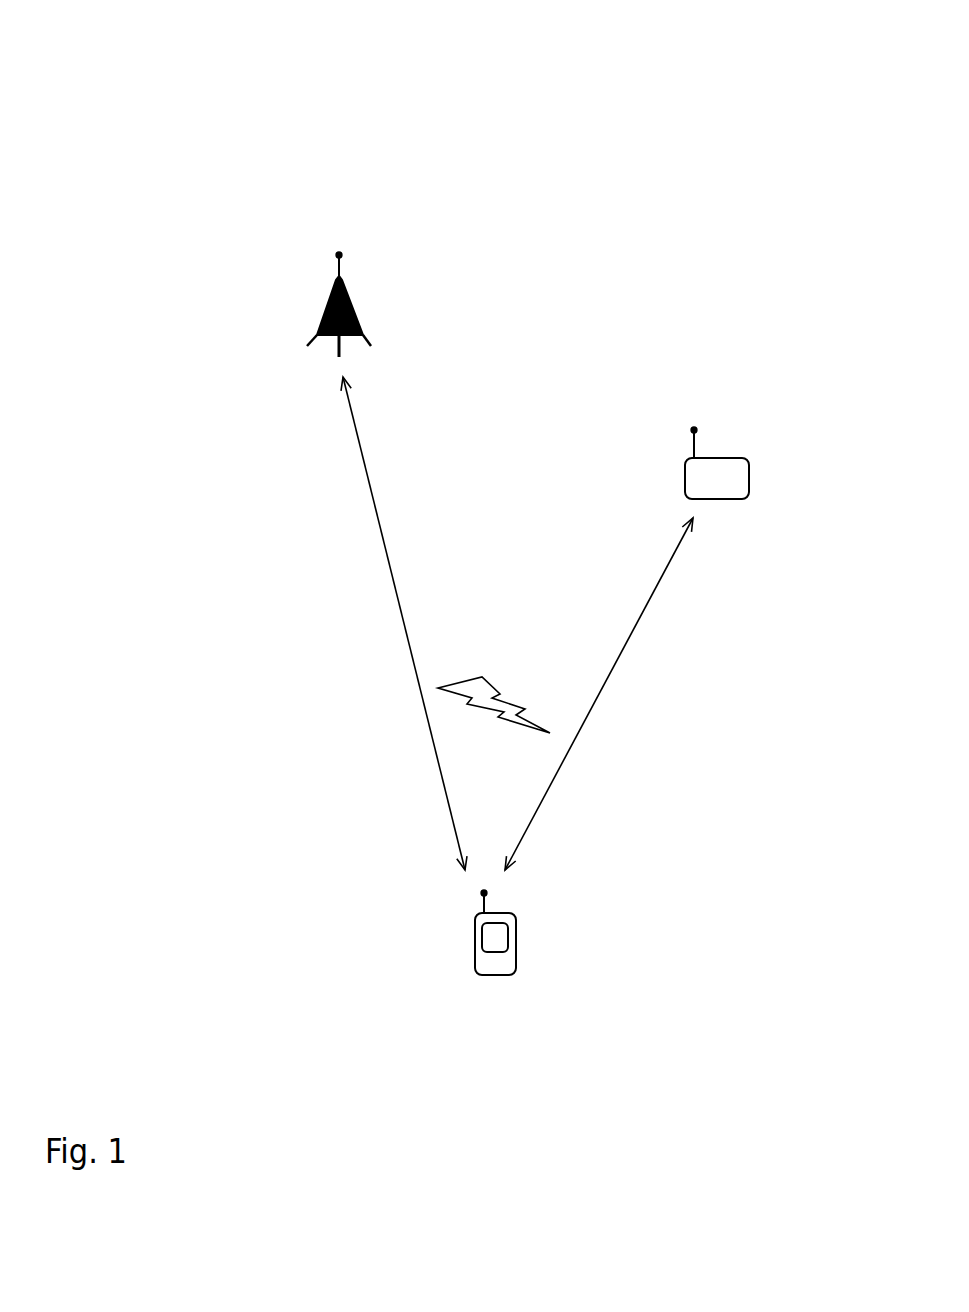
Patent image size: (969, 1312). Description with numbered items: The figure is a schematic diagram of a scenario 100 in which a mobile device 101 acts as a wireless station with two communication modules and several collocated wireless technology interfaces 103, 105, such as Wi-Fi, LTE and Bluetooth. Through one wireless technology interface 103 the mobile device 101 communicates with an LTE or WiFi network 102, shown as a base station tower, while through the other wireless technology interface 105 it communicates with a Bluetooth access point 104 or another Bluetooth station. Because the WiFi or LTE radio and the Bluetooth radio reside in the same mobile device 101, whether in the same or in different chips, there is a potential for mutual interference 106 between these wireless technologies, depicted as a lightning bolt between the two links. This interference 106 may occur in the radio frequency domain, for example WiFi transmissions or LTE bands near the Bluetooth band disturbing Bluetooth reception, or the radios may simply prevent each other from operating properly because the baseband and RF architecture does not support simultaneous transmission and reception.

The scenario 100 is at (203, 92).
The mobile device 101 is at (508, 988).
The LTE or WiFi network 102 is at (313, 290).
The wireless technology interface 103 is at (377, 577).
The Bluetooth access point 104 is at (758, 470).
The wireless technology interface 105 is at (629, 675).
The mutual interference 106 is at (502, 683).